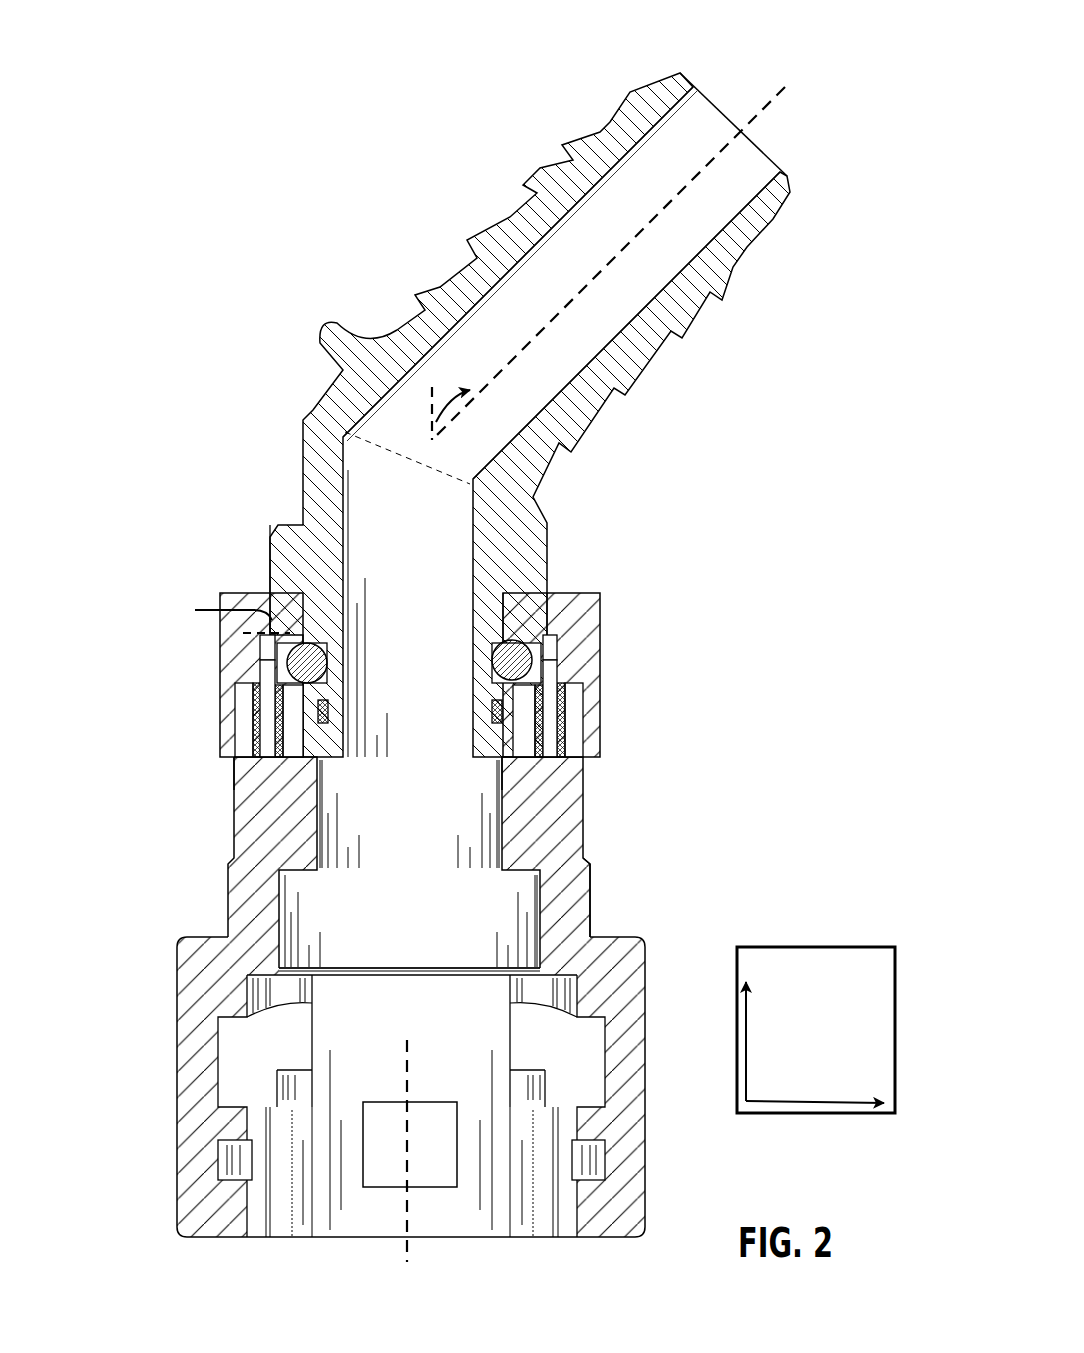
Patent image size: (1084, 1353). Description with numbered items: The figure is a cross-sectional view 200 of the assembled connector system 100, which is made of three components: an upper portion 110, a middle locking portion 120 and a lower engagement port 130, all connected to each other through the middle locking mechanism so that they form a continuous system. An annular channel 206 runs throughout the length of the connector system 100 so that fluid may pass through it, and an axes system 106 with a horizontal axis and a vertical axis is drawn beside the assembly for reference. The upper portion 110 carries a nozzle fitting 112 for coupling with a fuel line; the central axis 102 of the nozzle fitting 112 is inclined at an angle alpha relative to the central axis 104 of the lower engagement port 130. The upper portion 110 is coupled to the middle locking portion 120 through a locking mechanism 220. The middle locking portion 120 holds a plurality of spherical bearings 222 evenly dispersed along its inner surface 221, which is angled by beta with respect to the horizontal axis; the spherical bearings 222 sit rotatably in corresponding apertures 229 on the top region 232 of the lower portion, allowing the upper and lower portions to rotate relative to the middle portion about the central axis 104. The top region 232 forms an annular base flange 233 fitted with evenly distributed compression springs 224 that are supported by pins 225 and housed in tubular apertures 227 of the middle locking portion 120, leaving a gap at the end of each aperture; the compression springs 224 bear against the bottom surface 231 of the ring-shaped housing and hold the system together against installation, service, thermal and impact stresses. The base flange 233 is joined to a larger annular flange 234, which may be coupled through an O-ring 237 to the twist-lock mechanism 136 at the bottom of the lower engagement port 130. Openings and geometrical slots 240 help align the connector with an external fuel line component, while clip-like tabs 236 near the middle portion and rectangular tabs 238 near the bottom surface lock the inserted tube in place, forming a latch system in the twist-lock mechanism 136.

The cross-sectional view 200 is at (482, 640).
The connector system 100 is at (457, 665).
The central axis 102 is at (763, 120).
The central axis 104 is at (409, 1243).
The axes system 106 is at (772, 947).
The upper portion 110 is at (522, 415).
The nozzle fitting 112 is at (440, 198).
The middle locking portion 120 is at (430, 663).
The lower engagement port 130 is at (415, 1107).
The twist-lock mechanism 136 is at (190, 1058).
The annular channel 206 is at (597, 322).
The locking mechanism 220 is at (422, 674).
The inner surface 221 is at (585, 590).
The spherical bearings 222 is at (298, 648).
The compression springs 224 is at (257, 747).
The pins 225 is at (260, 673).
The tubular apertures 227 is at (260, 647).
The apertures 229 is at (495, 677).
The bottom surface 231 is at (517, 762).
The top region 232 is at (428, 993).
The annular base flange 233 is at (233, 783).
The annular flange 234 is at (590, 903).
The clip-like tabs 236 is at (225, 1013).
The O-ring 237 is at (541, 967).
The rectangular tabs 238 is at (227, 1163).
The geometrical slots 240 is at (436, 1147).